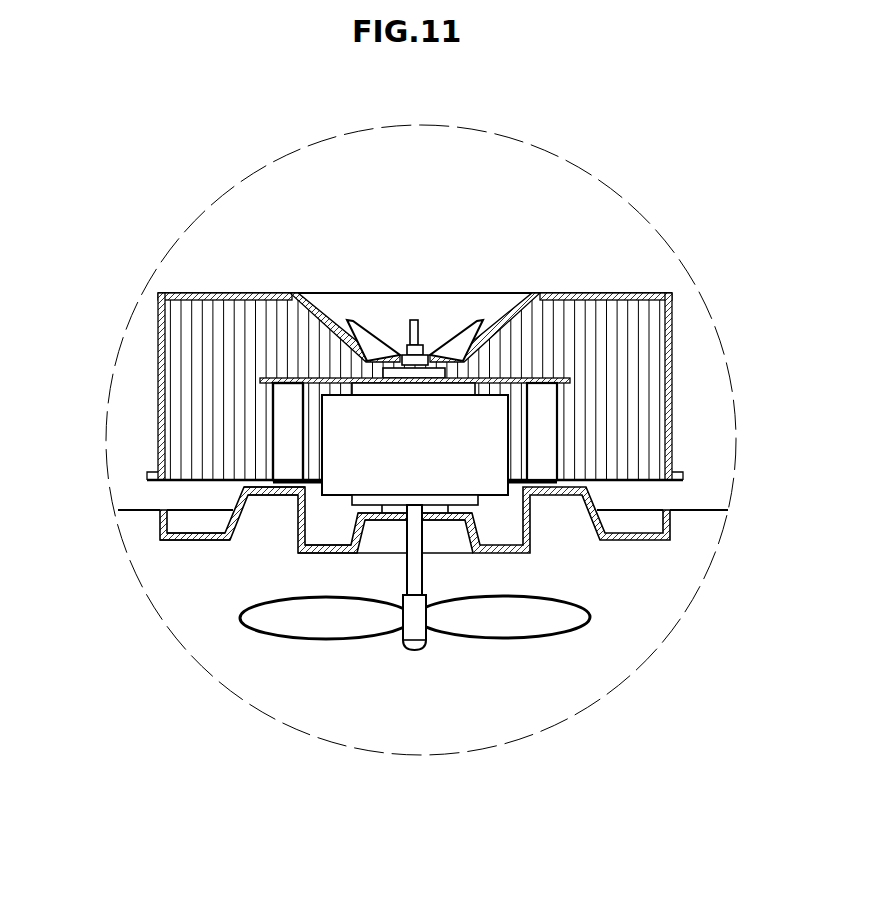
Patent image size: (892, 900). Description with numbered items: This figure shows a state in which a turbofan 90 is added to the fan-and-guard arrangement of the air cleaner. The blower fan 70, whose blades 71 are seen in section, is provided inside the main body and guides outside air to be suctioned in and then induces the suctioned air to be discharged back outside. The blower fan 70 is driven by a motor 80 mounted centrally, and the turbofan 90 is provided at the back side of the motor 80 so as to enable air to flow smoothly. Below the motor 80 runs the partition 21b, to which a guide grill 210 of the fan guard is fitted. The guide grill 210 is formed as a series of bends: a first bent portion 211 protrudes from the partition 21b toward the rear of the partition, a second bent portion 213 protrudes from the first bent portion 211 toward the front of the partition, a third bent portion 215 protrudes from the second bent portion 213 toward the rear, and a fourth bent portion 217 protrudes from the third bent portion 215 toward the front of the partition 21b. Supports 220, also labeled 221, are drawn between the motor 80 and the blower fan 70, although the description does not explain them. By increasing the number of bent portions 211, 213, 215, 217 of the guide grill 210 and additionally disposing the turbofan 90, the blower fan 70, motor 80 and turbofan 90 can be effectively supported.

The blower fan 70 is at (690, 327).
The blade 71 is at (190, 344).
The motor 80 is at (456, 410).
The turbofan 90 is at (599, 602).
The guide grill 210 is at (414, 653).
The first bent portion 211 is at (200, 540).
The second bent portion 213 is at (275, 495).
The third bent portion 215 is at (328, 553).
The fourth bent portion 217 is at (390, 520).
The motor support 220 is at (268, 433).
The support leg 221 is at (166, 435).
The partition 21b is at (136, 510).